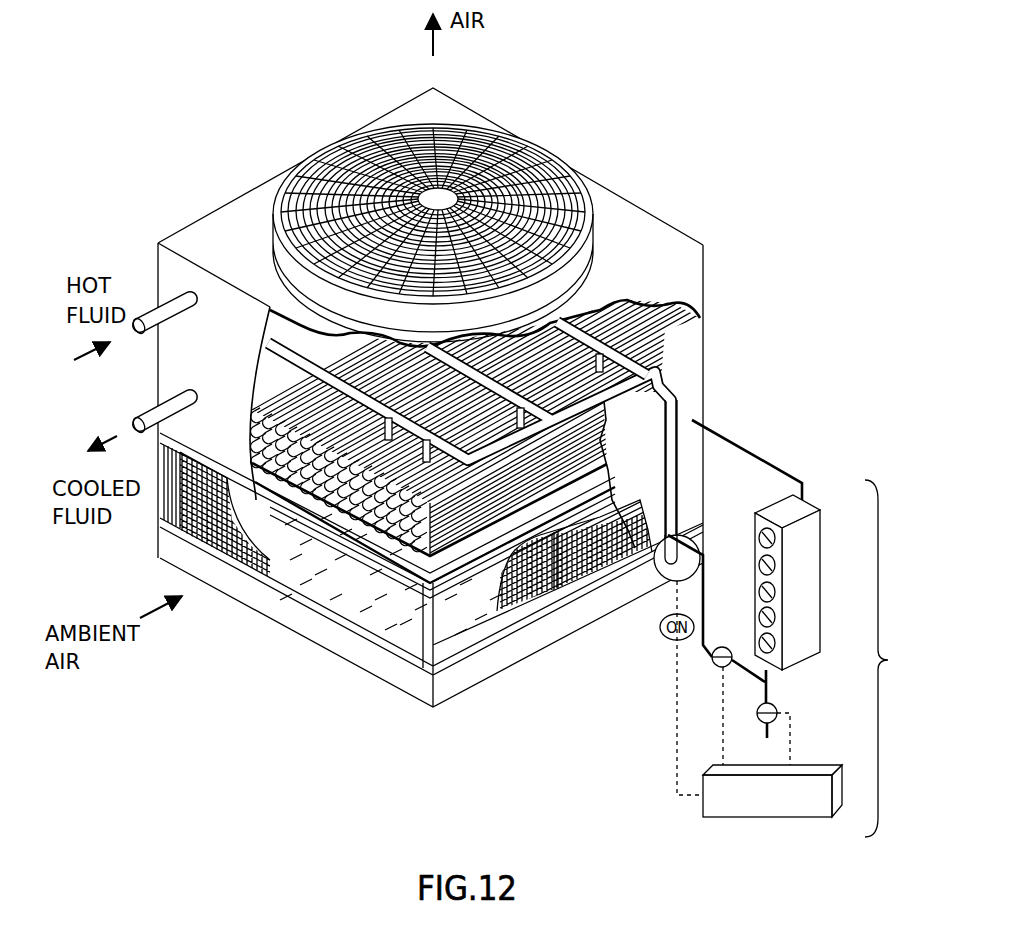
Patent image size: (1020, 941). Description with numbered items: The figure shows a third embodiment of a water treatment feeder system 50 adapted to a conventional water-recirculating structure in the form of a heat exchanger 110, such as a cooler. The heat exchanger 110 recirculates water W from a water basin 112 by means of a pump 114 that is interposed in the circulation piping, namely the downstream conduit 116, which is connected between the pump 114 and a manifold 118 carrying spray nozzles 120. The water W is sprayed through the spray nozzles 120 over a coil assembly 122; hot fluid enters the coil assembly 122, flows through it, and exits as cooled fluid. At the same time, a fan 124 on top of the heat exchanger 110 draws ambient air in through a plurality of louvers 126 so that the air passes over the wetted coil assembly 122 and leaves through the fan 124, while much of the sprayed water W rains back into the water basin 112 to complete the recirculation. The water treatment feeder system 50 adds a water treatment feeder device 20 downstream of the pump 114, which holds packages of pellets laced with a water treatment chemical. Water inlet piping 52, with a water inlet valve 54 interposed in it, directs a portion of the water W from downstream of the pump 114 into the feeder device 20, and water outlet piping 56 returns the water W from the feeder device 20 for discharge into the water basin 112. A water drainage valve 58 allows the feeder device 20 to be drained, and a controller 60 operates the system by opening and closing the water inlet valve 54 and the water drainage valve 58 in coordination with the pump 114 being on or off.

The heat exchanger 110 is at (237, 166).
The water basin 112 is at (295, 572).
The pump 114 is at (663, 573).
The downstream conduit 116 is at (676, 423).
The manifold 118 is at (690, 322).
The spray nozzles 120 is at (300, 386).
The coil assembly 122 is at (478, 556).
The fan 124 is at (492, 146).
The louvers 126 is at (172, 505).
The water W is at (393, 617).
The water treatment feeder device 20 is at (815, 488).
The water treatment feeder system 50 is at (895, 658).
The water inlet piping 52 is at (700, 650).
The water inlet valve 54 is at (722, 645).
The water outlet piping 56 is at (755, 449).
The water drainage valve 58 is at (773, 702).
The controller 60 is at (782, 817).